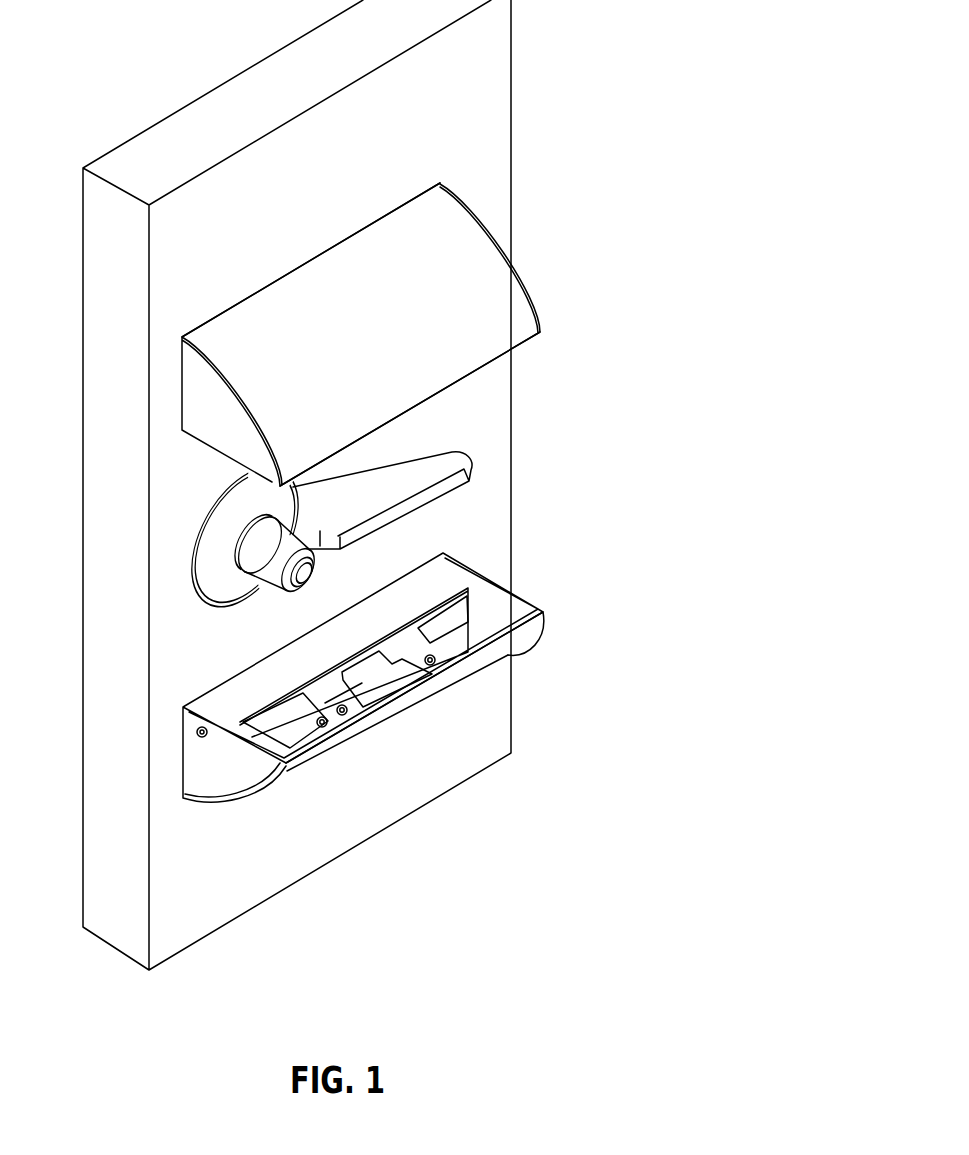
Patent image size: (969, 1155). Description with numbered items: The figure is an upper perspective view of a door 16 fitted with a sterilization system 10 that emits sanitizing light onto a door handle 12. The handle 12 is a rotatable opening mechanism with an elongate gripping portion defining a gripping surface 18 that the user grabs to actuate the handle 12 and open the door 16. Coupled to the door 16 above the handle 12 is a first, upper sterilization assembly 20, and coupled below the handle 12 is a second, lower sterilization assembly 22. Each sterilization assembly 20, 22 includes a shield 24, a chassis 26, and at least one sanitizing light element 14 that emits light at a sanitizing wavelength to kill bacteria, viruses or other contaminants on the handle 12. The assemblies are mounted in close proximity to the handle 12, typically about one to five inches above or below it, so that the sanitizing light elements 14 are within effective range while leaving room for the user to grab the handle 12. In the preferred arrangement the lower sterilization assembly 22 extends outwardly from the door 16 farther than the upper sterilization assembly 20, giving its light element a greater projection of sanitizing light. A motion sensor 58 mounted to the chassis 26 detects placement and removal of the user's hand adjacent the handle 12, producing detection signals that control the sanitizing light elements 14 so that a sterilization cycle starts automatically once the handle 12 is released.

The sterilization system 10 is at (652, 107).
The door handle 12 is at (388, 515).
The sanitizing light elements 14 is at (443, 657).
The door 16 is at (512, 73).
The gripping surface 18 is at (455, 458).
The upper sterilization assembly 20 is at (512, 212).
The lower sterilization assembly 22 is at (488, 563).
The shield 24 is at (472, 290).
The chassis 26 is at (408, 643).
The motion sensor 58 is at (360, 721).